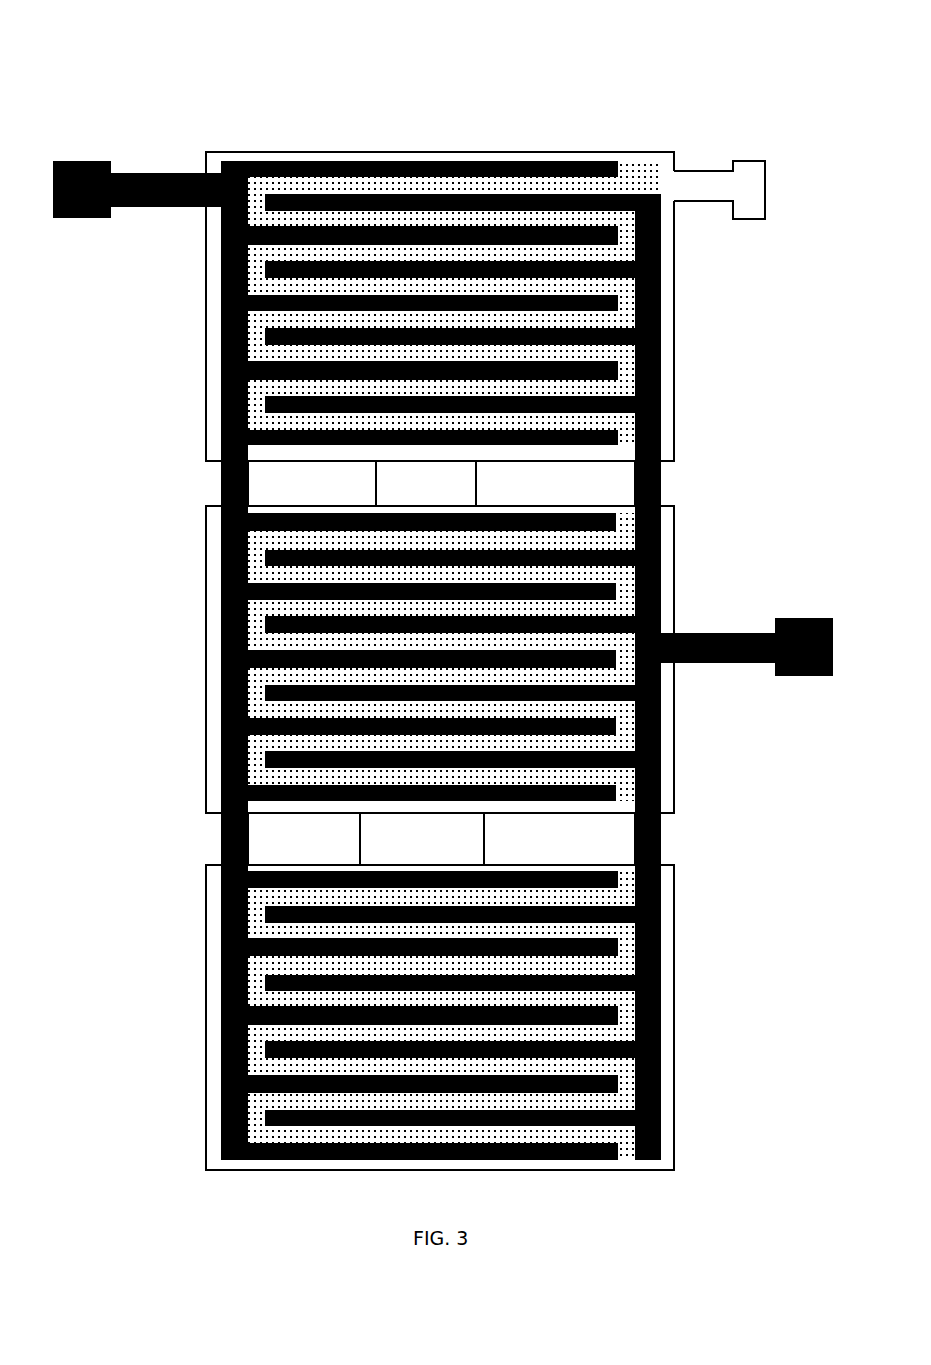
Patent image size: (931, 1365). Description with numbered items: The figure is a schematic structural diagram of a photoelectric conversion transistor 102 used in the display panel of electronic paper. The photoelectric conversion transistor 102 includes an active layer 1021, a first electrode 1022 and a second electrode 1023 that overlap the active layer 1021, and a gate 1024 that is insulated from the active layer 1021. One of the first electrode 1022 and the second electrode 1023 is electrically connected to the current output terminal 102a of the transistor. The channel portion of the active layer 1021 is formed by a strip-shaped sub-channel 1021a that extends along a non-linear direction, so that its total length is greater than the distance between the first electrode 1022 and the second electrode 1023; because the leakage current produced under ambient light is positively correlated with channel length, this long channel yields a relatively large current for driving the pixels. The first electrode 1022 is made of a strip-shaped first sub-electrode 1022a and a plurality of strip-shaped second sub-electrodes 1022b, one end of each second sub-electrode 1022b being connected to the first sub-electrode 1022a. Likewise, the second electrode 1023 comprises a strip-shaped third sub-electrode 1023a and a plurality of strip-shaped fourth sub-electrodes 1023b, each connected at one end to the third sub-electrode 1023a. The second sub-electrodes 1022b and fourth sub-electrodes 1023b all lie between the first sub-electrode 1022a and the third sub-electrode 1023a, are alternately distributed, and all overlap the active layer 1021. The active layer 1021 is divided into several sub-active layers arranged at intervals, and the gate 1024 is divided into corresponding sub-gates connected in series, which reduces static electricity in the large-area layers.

The photoelectric conversion transistor 102 is at (95, 41).
The current output terminal 102a is at (137, 248).
The active layer 1021 is at (640, 158).
The strip-shaped sub-channel 1021a is at (653, 243).
The first electrode 1022 is at (98, 326).
The first sub-electrode 1022a is at (212, 325).
The second sub-electrodes 1022b is at (272, 373).
The second electrode 1023 is at (768, 293).
The third sub-electrode 1023a is at (653, 292).
The fourth sub-electrodes 1023b is at (597, 340).
The gate 1024 is at (432, 138).